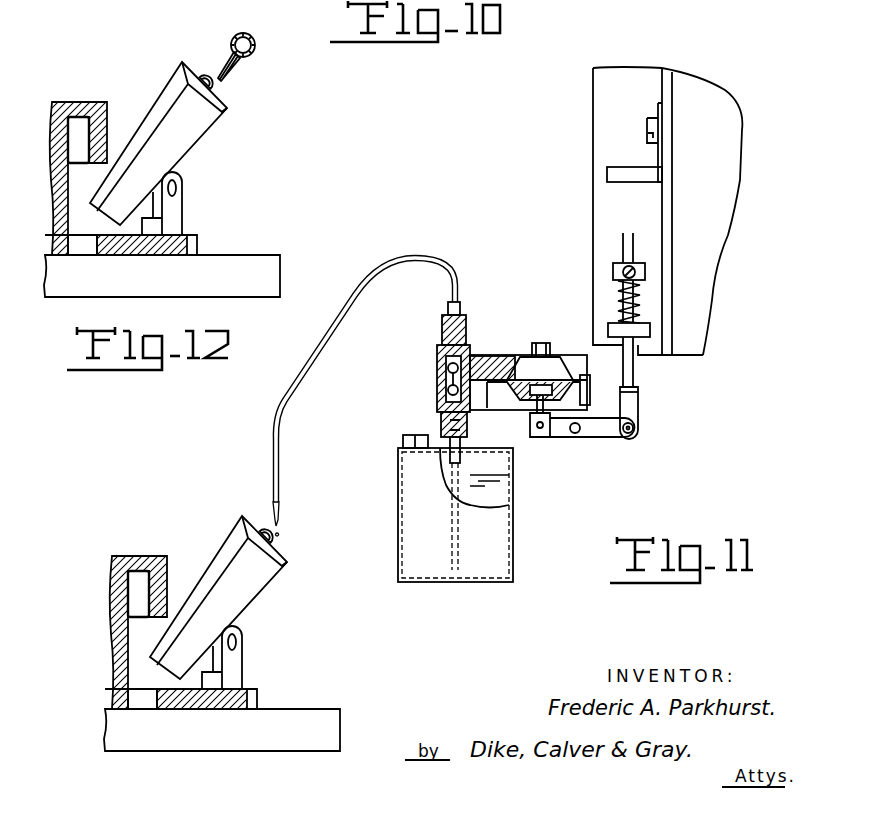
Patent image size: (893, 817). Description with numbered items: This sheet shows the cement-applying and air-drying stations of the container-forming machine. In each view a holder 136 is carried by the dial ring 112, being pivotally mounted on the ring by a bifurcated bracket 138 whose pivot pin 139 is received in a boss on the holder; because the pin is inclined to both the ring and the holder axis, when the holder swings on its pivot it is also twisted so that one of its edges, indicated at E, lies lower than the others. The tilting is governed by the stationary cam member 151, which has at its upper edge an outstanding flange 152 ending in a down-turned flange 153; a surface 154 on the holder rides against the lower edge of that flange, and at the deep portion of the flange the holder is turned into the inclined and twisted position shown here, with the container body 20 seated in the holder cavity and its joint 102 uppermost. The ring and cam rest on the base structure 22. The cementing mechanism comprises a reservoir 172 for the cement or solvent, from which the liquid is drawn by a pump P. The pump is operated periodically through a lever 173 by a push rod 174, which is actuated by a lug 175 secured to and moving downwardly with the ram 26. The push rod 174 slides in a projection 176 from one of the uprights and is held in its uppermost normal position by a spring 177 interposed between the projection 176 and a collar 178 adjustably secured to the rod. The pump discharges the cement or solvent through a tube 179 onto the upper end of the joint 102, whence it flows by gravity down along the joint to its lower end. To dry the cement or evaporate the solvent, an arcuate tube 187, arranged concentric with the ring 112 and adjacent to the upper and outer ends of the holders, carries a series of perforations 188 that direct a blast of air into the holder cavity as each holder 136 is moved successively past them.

In FIG. 12, the container body 20 is at (186, 62).
In FIG. 11, the container body 20 is at (254, 516).
In FIG. 12, the base plate 22 is at (258, 270).
In FIG. 11, the base plate 22 is at (232, 708).
In FIG. 11, the ram 26 is at (712, 222).
In FIG. 12, the joint 102 is at (212, 85).
In FIG. 11, the joint 102 is at (306, 537).
In FIG. 12, the dial ring 112 is at (178, 234).
In FIG. 11, the dial ring 112 is at (209, 678).
In FIG. 12, the holder 136 is at (168, 84).
In FIG. 11, the holder 136 is at (243, 597).
In FIG. 12, the bifurcated bracket 138 is at (171, 206).
In FIG. 11, the bifurcated bracket 138 is at (221, 704).
In FIG. 12, the pivot pin 139 is at (176, 187).
In FIG. 11, the pivot pin 139 is at (270, 633).
In FIG. 12, the cam member 151 is at (56, 100).
In FIG. 11, the cam member 151 is at (117, 604).
In FIG. 12, the outstanding flange 152 is at (84, 102).
In FIG. 11, the outstanding flange 152 is at (143, 569).
In FIG. 12, the down-turned flange 153 is at (113, 160).
In FIG. 11, the down-turned flange 153 is at (181, 572).
In FIG. 12, the surface 154 is at (92, 180).
In FIG. 11, the surface 154 is at (149, 699).
In FIG. 11, the reservoir 172 is at (514, 522).
In FIG. 11, the lever 173 is at (598, 437).
In FIG. 11, the push rod 174 is at (630, 373).
In FIG. 11, the lug 175 is at (607, 176).
In FIG. 11, the projection 176 is at (612, 330).
In FIG. 11, the spring 177 is at (620, 297).
In FIG. 11, the collar 178 is at (614, 267).
In FIG. 11, the tube 179 is at (322, 357).
In FIG. 12, the arcuate tube 187 is at (254, 51).
In FIG. 12, the perforations 188 is at (229, 50).
In FIG. 12, the edge of holder E is at (228, 112).
In FIG. 11, the edge of holder E is at (306, 568).
In FIG. 11, the pump P is at (517, 370).